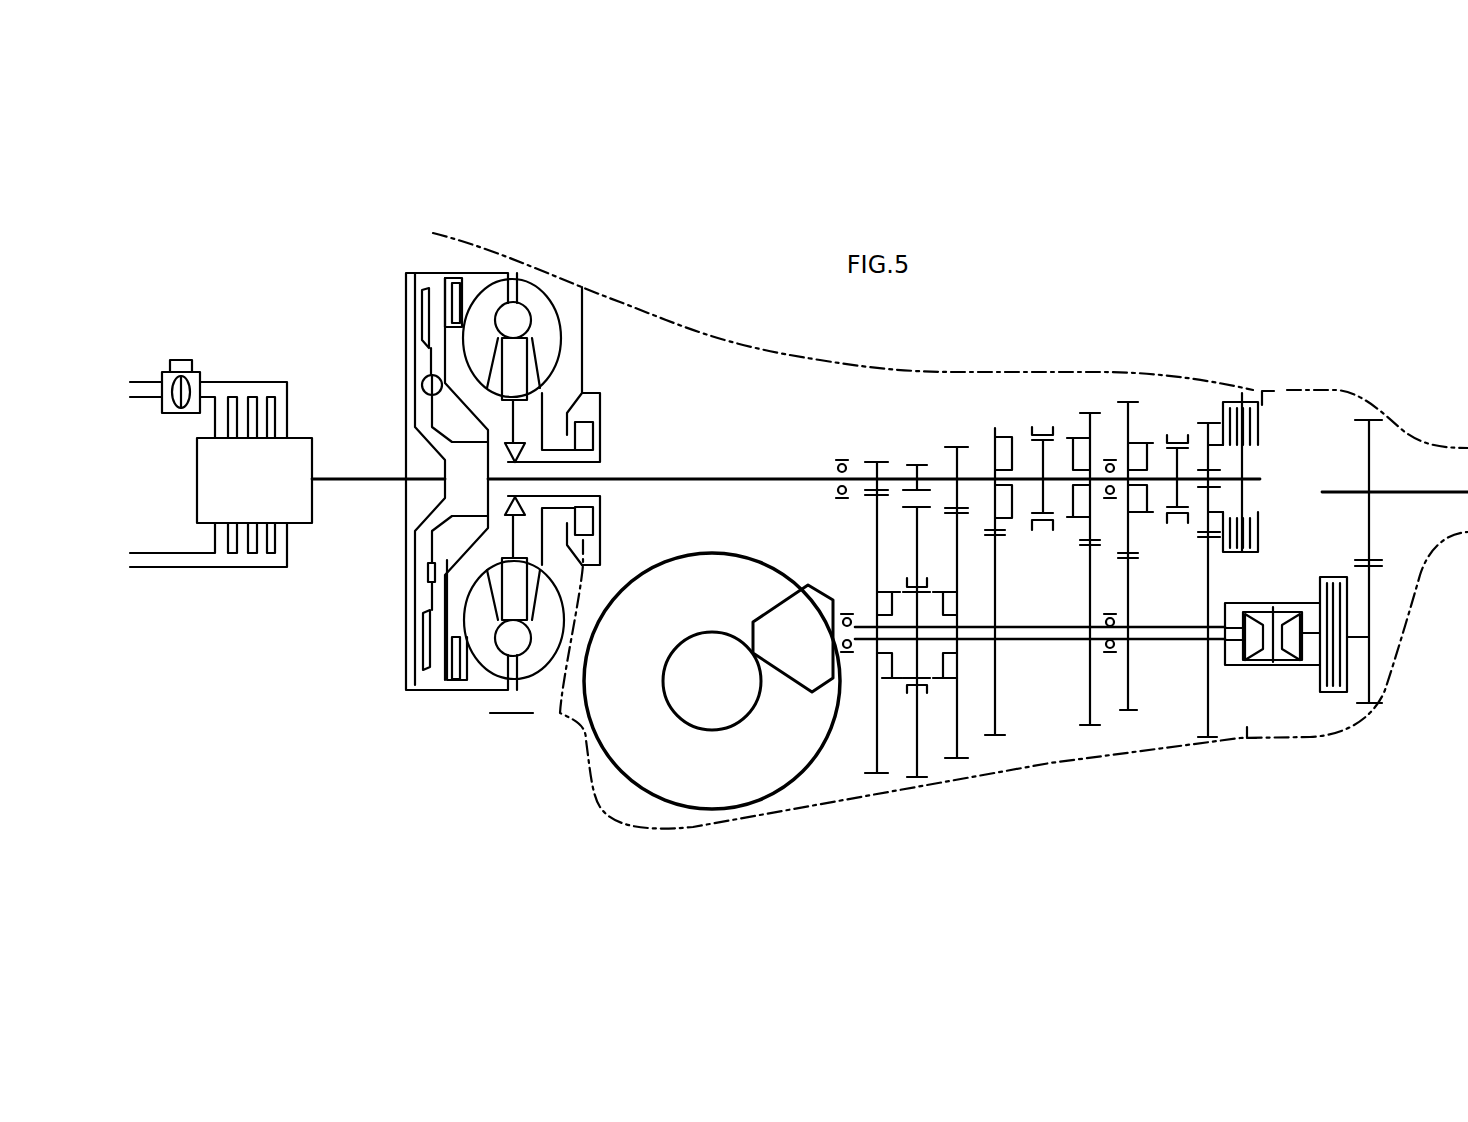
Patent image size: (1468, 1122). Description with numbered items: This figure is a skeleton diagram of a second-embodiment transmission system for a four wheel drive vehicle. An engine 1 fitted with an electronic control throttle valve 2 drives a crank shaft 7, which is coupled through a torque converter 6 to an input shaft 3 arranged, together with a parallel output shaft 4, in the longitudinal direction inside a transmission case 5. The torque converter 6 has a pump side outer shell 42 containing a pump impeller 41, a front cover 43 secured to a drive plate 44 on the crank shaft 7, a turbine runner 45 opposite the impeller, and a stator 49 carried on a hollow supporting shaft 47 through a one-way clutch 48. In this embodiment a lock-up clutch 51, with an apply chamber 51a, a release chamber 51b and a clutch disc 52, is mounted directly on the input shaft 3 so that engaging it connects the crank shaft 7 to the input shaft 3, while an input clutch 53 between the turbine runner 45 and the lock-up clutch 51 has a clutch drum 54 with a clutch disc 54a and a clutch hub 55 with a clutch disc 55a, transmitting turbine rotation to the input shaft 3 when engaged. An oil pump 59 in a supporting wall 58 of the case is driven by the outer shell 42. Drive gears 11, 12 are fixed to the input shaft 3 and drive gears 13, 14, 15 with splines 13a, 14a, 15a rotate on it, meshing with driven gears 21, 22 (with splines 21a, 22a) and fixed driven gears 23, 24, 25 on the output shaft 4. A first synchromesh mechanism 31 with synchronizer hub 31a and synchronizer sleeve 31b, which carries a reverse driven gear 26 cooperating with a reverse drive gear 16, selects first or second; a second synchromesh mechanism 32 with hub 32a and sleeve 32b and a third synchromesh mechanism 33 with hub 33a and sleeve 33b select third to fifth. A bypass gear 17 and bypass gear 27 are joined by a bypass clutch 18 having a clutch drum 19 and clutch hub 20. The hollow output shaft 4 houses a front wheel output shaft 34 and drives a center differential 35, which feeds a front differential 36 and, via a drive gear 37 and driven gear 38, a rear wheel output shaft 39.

The engine 1 is at (197, 482).
The electronic control throttle valve 2 is at (181, 360).
The input shaft 3 is at (717, 476).
The output shaft 4 is at (1184, 645).
The transmission case 5 is at (775, 348).
The torque converter 6 is at (530, 262).
The crank shaft 7 is at (335, 487).
The drive gear for the 1st gear ratio 11 is at (873, 461).
The drive gear for the 2nd gear ratio 12 is at (955, 446).
The drive gear for the 3rd gear ratio 13 is at (982, 427).
The spline 13a is at (1017, 520).
The drive gear for the 4th gear ratio 14 is at (1088, 413).
The spline 14a is at (1073, 518).
The drive gear for the 5th gear ratio 15 is at (1127, 401).
The spline 15a is at (1147, 513).
The drive gear for reverse speed 16 is at (888, 462).
The bypass gear of the drive side 17 is at (1203, 423).
The bypass clutch 18 is at (1283, 410).
The clutch drum 19 is at (1260, 393).
The clutch hub 20 is at (1250, 445).
The driven gear for the 1st gear ratio 21 is at (877, 775).
The spline 21a is at (890, 682).
The driven gear for the 2nd gear ratio 22 is at (962, 760).
The spline 22a is at (947, 695).
The driven gear for the 3rd gear ratio 23 is at (997, 740).
The driven gear for the 4th gear ratio 24 is at (1084, 730).
The driven gear for the 5th gear ratio 25 is at (1128, 714).
The driven gear for reverse speed 26 is at (910, 780).
The bypass gear of the driven side 27 is at (1207, 742).
The first synchromesh mechanism 31 is at (890, 718).
The synchronizer hub 31a is at (878, 608).
The synchronizer sleeve 31b is at (912, 575).
The second synchromesh mechanism 32 is at (1070, 390).
The synchronizer hub 32a is at (1038, 427).
The synchronizer sleeve 32b is at (1045, 532).
The third synchromesh mechanism 33 is at (1177, 396).
The synchronizer hub 33a is at (1180, 496).
The synchronizer sleeve 33b is at (1175, 524).
The front wheel output shaft 34 is at (1166, 645).
The center differential 35 is at (1296, 698).
The front differential 36 is at (708, 797).
The drive gear 37 is at (1370, 657).
The driven gear 38 is at (1368, 465).
The rear wheel output shaft 39 is at (1400, 496).
The pump impeller 41 is at (556, 345).
The outer shell on the pump side 42 is at (558, 268).
The front cover 43 is at (415, 590).
The drive plate 44 is at (420, 388).
The turbine runner 45 is at (477, 297).
The hollow supporting shaft 47 is at (602, 465).
The one-way clutch 48 is at (500, 452).
The stator 49 is at (493, 667).
The lock-up clutch 51 is at (420, 425).
The apply chamber 51a is at (428, 623).
The release chamber 51b is at (427, 350).
The clutch disc 52 is at (423, 657).
The input clutch 53 is at (462, 262).
The clutch drum 54 is at (455, 272).
The clutch disc 54a is at (473, 692).
The clutch hub 55 is at (440, 330).
The clutch disc 55a is at (447, 290).
The supporting wall 58 is at (560, 693).
The oil pump 59 is at (595, 522).